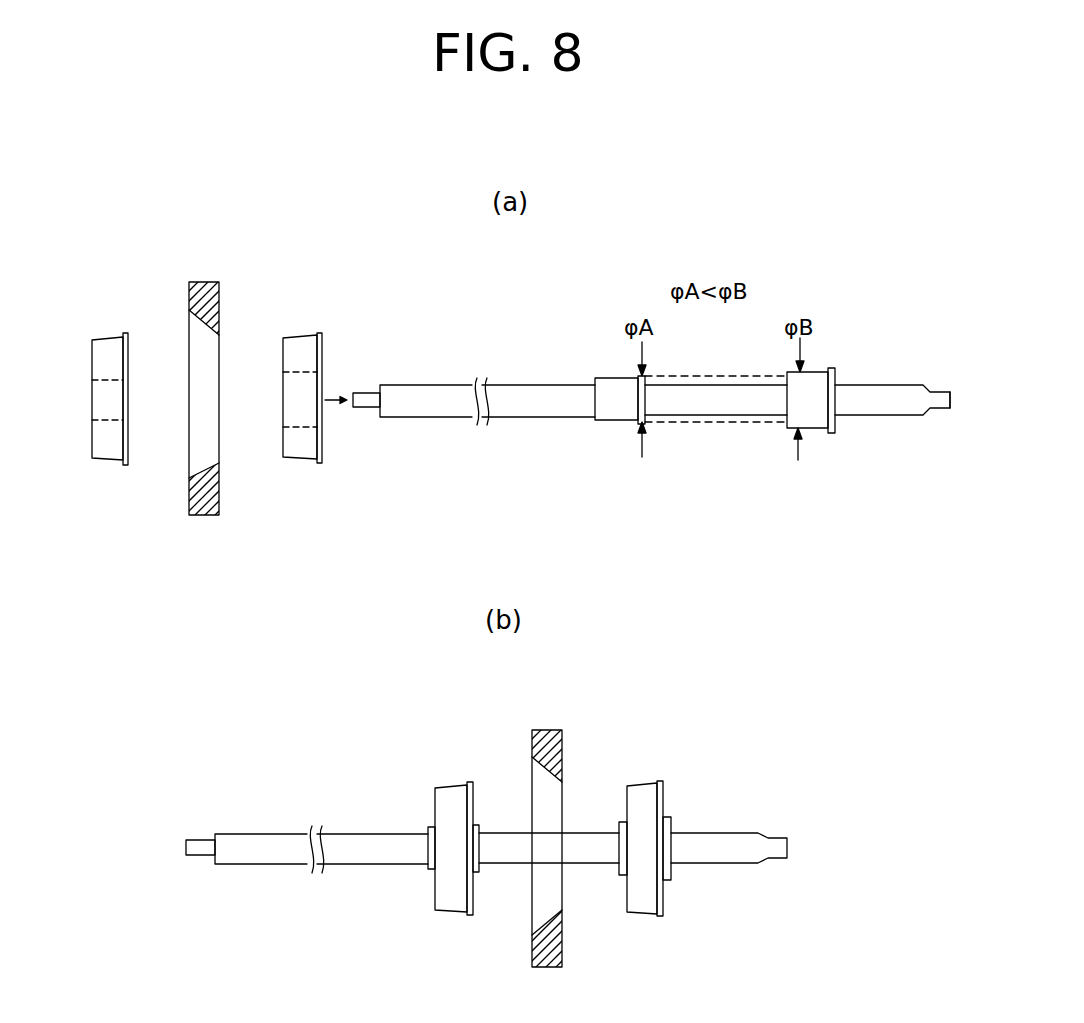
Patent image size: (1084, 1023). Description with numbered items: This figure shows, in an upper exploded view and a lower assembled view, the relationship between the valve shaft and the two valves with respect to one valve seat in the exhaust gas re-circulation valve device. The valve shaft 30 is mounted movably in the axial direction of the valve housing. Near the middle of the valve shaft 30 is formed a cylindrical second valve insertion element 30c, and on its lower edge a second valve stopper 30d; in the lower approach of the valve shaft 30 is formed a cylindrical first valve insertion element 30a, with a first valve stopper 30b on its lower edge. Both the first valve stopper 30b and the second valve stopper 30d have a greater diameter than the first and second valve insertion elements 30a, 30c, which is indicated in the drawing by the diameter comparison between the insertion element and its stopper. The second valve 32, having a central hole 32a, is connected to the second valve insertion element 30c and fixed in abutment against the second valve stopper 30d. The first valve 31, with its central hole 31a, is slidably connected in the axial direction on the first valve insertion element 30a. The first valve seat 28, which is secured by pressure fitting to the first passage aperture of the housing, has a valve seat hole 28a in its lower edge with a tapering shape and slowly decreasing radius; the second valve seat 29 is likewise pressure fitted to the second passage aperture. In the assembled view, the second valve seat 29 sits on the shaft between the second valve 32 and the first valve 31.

The first valve seat 28 is at (206, 282).
The valve seat hole 28a is at (190, 467).
The second valve seat 29 is at (549, 730).
The valve shaft 30 is at (764, 450).
The first valve insertion element 30a is at (808, 405).
The first valve stopper 30b is at (833, 420).
The second valve insertion element 30c is at (617, 403).
The second valve stopper 30d is at (646, 404).
The first valve 31 is at (302, 336).
The central hole of the first valve 31a is at (283, 402).
The second valve 32 is at (110, 338).
The central hole of the second valve 32a is at (88, 400).